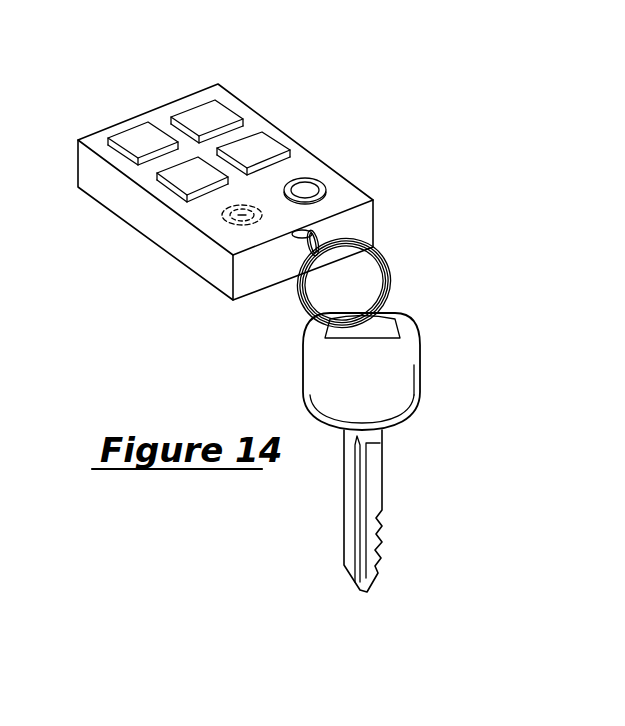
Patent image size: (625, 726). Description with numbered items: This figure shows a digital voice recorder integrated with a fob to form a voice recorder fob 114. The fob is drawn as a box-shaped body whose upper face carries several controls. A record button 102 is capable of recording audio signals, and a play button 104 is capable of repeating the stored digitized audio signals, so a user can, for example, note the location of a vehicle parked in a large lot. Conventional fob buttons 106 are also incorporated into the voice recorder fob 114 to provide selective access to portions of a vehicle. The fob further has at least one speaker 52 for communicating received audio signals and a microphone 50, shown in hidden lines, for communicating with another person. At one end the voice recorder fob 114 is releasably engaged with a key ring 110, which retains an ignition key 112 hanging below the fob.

The voice recorder fob 114 is at (271, 98).
The record button 102 is at (142, 138).
The play button 104 is at (203, 110).
The conventional fob buttons 106 is at (190, 177).
The speaker 52 is at (304, 190).
The microphone 50 is at (232, 215).
The key ring 110 is at (392, 271).
The ignition key 112 is at (323, 388).